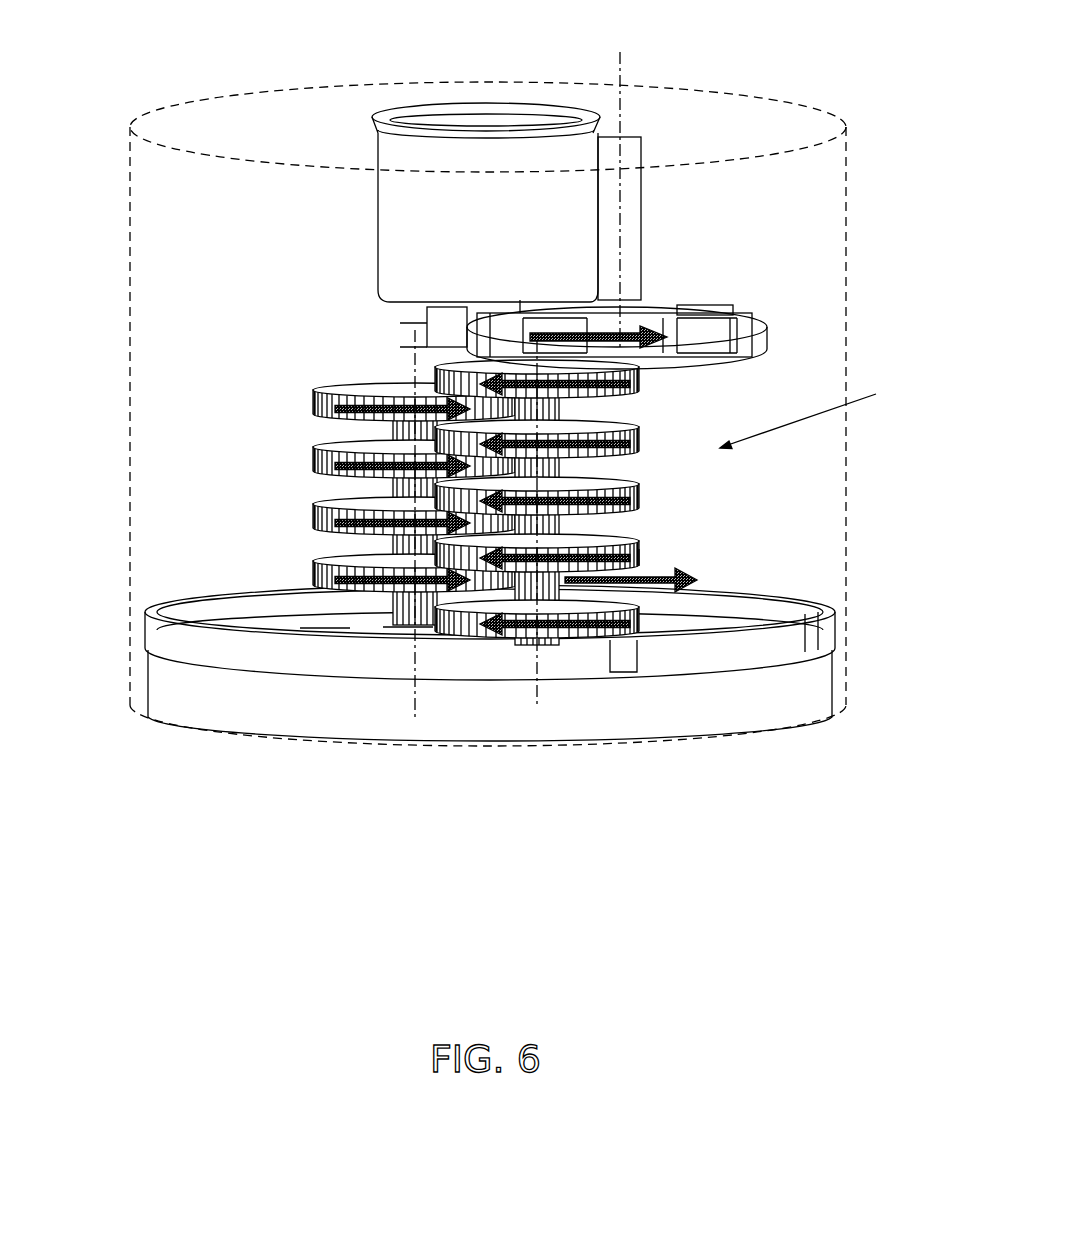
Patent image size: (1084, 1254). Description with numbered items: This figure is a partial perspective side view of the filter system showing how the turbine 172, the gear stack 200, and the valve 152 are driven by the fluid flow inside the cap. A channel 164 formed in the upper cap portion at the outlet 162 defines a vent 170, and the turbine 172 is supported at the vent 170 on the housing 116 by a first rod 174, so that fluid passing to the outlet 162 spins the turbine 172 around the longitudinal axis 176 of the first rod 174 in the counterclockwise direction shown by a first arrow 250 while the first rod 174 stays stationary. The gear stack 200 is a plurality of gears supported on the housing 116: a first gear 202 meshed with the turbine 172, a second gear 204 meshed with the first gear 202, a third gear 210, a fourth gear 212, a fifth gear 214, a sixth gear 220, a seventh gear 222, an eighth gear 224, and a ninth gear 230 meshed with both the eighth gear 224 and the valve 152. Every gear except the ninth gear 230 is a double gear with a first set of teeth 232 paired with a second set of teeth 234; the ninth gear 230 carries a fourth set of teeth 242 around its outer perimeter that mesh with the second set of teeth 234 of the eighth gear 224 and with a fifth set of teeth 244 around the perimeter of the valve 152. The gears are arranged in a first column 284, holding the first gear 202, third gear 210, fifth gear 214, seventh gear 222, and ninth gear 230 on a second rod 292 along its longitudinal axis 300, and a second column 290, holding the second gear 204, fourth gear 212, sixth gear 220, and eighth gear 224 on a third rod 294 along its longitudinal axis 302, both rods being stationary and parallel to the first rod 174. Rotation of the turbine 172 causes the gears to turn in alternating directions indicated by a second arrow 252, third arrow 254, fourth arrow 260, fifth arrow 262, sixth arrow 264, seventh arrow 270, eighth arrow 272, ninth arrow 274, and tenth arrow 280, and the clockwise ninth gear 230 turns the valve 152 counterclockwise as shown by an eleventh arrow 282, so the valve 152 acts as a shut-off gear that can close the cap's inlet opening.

The housing 116 is at (840, 622).
The valve 152 is at (640, 565).
The outlet 162 is at (428, 130).
The channel 164 is at (443, 360).
The vent 170 is at (505, 345).
The turbine 172 is at (670, 310).
The first rod 174 is at (642, 187).
The longitudinal axis 176 is at (620, 73).
The gear stack 200 is at (821, 410).
The first gear 202 is at (440, 364).
The second gear 204 is at (375, 394).
The third gear 210 is at (593, 484).
The fourth gear 212 is at (365, 448).
The fifth gear 214 is at (593, 540).
The sixth gear 220 is at (367, 507).
The seventh gear 222 is at (600, 604).
The eighth gear 224 is at (370, 565).
The ninth gear 230 is at (640, 616).
The first set of teeth 232 is at (593, 428).
The second set of teeth 234 is at (637, 425).
The fourth set of teeth 242 is at (640, 620).
The fifth set of teeth 244 is at (580, 640).
The first arrow 250 is at (643, 285).
The second arrow 252 is at (470, 390).
The third arrow 254 is at (330, 409).
The fourth arrow 260 is at (637, 482).
The fifth arrow 262 is at (335, 466).
The sixth arrow 264 is at (640, 533).
The seventh arrow 270 is at (335, 523).
The eighth arrow 272 is at (678, 577).
The ninth arrow 274 is at (335, 580).
The tenth arrow 280 is at (549, 637).
The eleventh arrow 282 is at (747, 550).
The first column 284 is at (636, 662).
The second column 290 is at (353, 622).
The second rod 292 is at (468, 637).
The third rod 294 is at (400, 633).
The longitudinal axis 300 is at (520, 347).
The longitudinal axis 302 is at (426, 345).